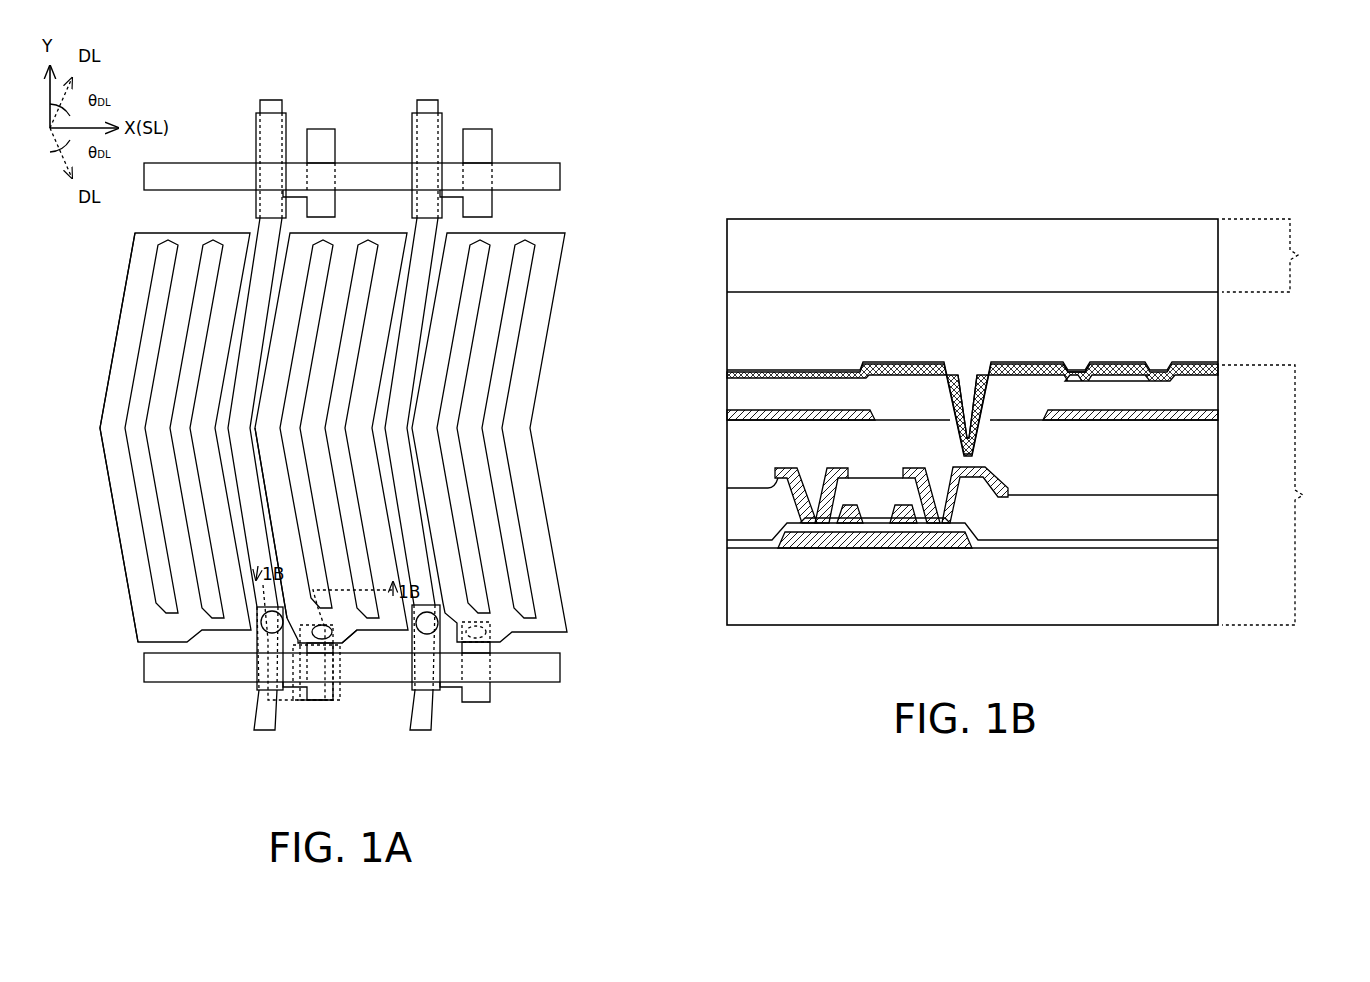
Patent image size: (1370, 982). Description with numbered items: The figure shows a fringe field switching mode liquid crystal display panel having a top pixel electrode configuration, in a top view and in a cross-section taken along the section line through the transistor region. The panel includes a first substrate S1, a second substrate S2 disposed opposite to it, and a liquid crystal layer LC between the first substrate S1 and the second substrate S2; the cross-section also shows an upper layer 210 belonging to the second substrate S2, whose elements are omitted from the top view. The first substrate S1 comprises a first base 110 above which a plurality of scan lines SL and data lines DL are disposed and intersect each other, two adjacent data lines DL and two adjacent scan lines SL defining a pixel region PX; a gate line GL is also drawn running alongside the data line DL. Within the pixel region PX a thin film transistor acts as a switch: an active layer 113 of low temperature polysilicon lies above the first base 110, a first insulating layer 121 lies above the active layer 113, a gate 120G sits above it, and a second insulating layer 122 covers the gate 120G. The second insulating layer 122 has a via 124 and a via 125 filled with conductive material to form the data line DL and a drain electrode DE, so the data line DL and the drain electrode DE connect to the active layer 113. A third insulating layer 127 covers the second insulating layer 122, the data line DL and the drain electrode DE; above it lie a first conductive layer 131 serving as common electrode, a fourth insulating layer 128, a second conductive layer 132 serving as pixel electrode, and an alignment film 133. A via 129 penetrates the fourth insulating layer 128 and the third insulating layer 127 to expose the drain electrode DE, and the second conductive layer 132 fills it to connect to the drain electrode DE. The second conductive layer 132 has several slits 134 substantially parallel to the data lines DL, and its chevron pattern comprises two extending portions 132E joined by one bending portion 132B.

In FIG. 1B, the first base 110 is at (1200, 586).
In FIG. 1A, the active layer 113 is at (305, 700).
In FIG. 1B, the active layer 113 is at (905, 527).
In FIG. 1A, the gate 120G is at (318, 700).
In FIG. 1B, the gate 120G is at (852, 535).
In FIG. 1B, the first insulating layer 121 is at (848, 512).
In FIG. 1B, the second insulating layer 122 is at (1200, 520).
In FIG. 1A, the via 124 is at (263, 633).
In FIG. 1B, the via 124 is at (812, 477).
In FIG. 1A, the via 125 is at (336, 648).
In FIG. 1B, the via 125 is at (935, 505).
In FIG. 1B, the third insulating layer 127 is at (1202, 458).
In FIG. 1B, the fourth insulating layer 128 is at (1203, 392).
In FIG. 1A, the via 129 is at (345, 625).
In FIG. 1B, the via 129 is at (965, 420).
In FIG. 1B, the first conductive layer 131 is at (1213, 418).
In FIG. 1A, the second conductive layer 132 is at (331, 365).
In FIG. 1B, the second conductive layer 132 is at (1208, 372).
In FIG. 1A, the extending portions 132E is at (286, 318).
In FIG. 1A, the bending portion 132B is at (266, 422).
In FIG. 1B, the alignment film 133 is at (1208, 362).
In FIG. 1A, the slits 134 is at (368, 253).
In FIG. 1B, the slits 134 is at (1076, 362).
In FIG. 1B, the second substrate 210 is at (1203, 260).
In FIG. 1B, the liquid crystal layer LC is at (1203, 317).
In FIG. 1A, the pixel region PX is at (338, 365).
In FIG. 1A, the scan lines SL is at (180, 667).
In FIG. 1A, the data lines DL is at (267, 722).
In FIG. 1B, the data lines DL is at (775, 474).
In FIG. 1A, the gate line GL is at (422, 733).
In FIG. 1B, the drain electrode DE is at (1010, 492).
In FIG. 1B, the first substrate S1 is at (1278, 495).
In FIG. 1B, the second substrate S2 is at (1276, 255).